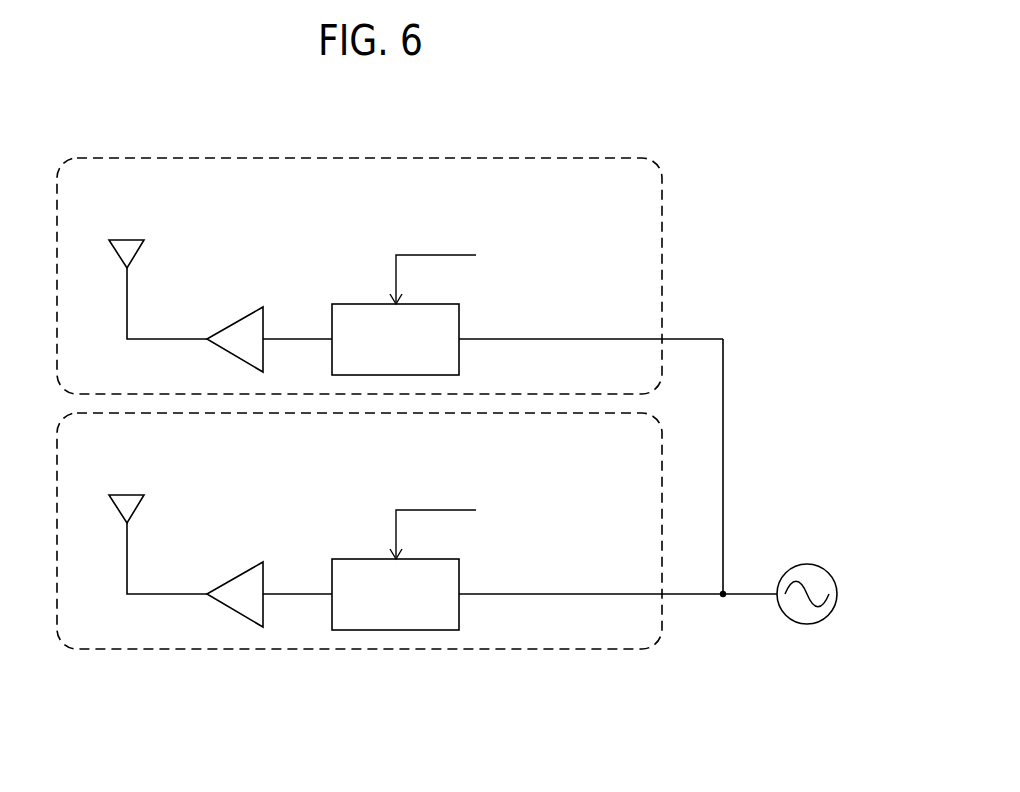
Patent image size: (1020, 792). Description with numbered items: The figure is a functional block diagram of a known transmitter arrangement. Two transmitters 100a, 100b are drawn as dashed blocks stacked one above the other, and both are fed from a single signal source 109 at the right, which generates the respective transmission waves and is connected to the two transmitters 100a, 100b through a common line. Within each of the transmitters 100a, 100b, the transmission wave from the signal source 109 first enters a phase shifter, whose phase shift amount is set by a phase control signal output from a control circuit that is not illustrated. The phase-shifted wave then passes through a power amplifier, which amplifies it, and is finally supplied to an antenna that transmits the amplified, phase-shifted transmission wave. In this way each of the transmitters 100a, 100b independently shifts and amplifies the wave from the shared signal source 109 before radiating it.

The transmitter 100a is at (645, 152).
The transmitter 100b is at (645, 657).
The signal source 109 is at (808, 565).